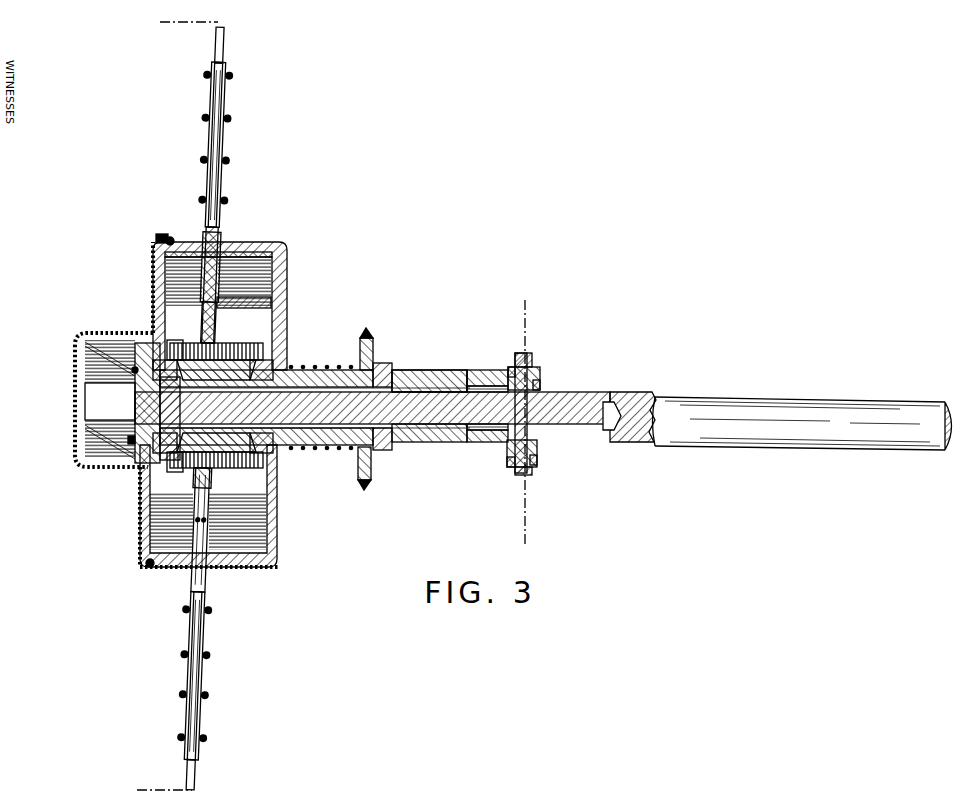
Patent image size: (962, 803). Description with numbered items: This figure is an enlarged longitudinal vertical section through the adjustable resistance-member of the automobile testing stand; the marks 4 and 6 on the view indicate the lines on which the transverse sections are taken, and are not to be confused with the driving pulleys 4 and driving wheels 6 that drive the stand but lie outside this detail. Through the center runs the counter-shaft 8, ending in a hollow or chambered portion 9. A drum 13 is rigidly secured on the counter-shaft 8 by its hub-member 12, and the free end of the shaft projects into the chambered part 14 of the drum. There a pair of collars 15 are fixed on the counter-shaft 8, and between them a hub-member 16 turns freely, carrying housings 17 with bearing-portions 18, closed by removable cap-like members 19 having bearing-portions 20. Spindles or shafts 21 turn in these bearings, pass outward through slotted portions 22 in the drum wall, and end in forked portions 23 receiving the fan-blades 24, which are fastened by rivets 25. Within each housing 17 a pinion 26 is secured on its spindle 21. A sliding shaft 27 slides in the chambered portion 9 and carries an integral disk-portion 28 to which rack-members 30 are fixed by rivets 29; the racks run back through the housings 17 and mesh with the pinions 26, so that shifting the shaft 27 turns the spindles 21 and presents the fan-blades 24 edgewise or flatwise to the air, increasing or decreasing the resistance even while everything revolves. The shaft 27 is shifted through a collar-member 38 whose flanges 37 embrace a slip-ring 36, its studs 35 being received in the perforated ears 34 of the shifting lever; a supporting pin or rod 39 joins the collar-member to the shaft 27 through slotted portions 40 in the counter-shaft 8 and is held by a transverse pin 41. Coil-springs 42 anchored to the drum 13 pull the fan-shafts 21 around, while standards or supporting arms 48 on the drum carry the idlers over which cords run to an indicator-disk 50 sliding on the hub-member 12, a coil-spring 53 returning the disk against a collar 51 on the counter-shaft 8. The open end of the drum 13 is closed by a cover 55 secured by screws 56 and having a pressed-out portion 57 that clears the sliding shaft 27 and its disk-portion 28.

The driving pulleys 4 is at (168, 406).
The driving wheels 6 is at (536, 422).
The counter-shaft 8 is at (440, 368).
The hollow or chambered portion 9 is at (620, 446).
The hub-member 12 is at (328, 372).
The drum 13 is at (284, 241).
The chambered part 14 is at (290, 256).
The collars 15 is at (85, 372).
The hub-member 16 is at (134, 408).
The housings 17 is at (298, 372).
The bearing-portions 18 is at (372, 408).
The cap-like members 19 is at (192, 362).
The bearing-portions 20 is at (196, 350).
The spindles or shafts 21 is at (222, 234).
The slotted portions 22 is at (226, 242).
The forked portions 23 is at (208, 140).
The fan-blades 24 is at (226, 40).
The rivets 25 is at (228, 158).
The pinion 26 is at (172, 342).
The sliding shaft 27 is at (405, 405).
The disk-portion 28 is at (84, 430).
The rivets 29 is at (85, 348).
The rack-members 30 is at (150, 342).
The perforated ears 34 is at (538, 362).
The studs 35 is at (530, 352).
The slip-ring 36 is at (541, 380).
The flanges 37 is at (510, 366).
The collar-member 38 is at (488, 366).
The supporting pin or rod 39 is at (638, 393).
The slotted portions 40 is at (476, 386).
The transverse pin 41 is at (601, 401).
The coil-springs 42 is at (289, 282).
The standards or supporting arms 48 is at (289, 302).
The indicator-disk 50 is at (375, 336).
The collar 51 is at (374, 360).
The coil-spring 53 is at (345, 364).
The closure or cover 55 is at (158, 244).
The screws 56 is at (170, 237).
The pressed-out portion 57 is at (74, 392).